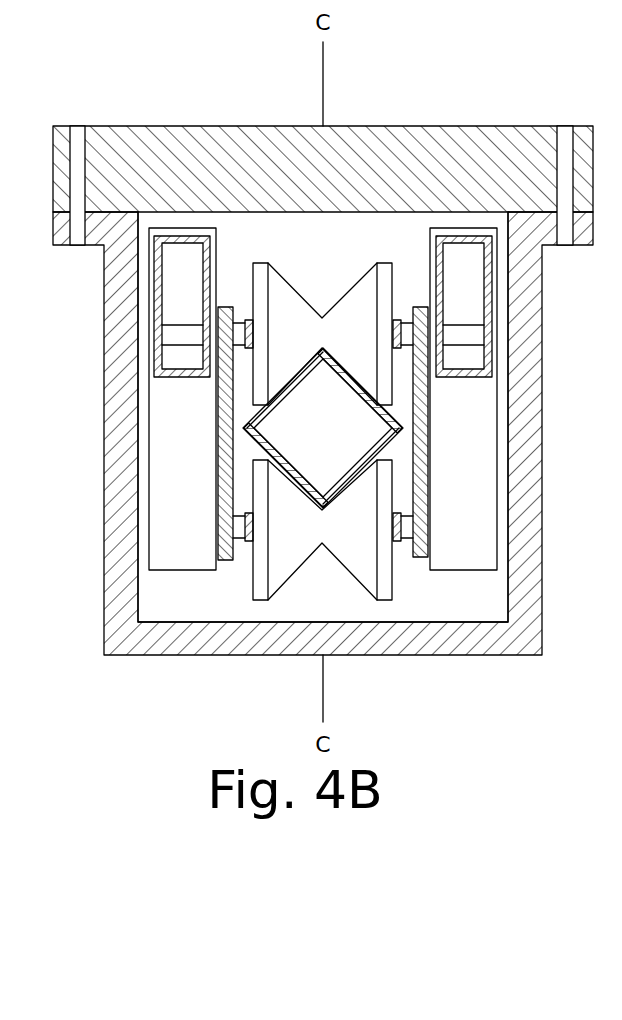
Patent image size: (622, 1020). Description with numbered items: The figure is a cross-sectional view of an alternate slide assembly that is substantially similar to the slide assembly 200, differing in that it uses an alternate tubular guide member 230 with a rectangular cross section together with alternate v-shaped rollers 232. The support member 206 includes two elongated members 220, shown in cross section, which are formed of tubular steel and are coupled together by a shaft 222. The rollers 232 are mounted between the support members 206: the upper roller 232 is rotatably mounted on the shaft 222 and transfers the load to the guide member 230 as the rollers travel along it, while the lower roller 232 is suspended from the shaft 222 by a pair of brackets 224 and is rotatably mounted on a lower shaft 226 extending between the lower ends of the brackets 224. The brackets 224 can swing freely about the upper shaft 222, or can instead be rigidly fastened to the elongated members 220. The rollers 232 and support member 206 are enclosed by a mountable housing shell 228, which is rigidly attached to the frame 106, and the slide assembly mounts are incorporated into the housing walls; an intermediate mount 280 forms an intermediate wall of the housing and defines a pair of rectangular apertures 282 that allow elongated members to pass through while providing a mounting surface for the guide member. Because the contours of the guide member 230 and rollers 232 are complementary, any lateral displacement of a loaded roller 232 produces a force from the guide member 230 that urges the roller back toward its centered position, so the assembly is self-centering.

The frame 106 is at (233, 152).
The slide assembly 200 is at (430, 103).
The support member 206 is at (155, 378).
The elongated member 220 is at (203, 272).
The shaft 222 is at (468, 332).
The bracket 224 is at (218, 567).
The lower shaft 226 is at (405, 527).
The housing shell 228 is at (197, 647).
The tubular guide member 230 is at (258, 431).
The v-shaped roller 232 is at (371, 345).
The intermediate mount 280 is at (413, 587).
The rectangular aperture 282 is at (113, 586).